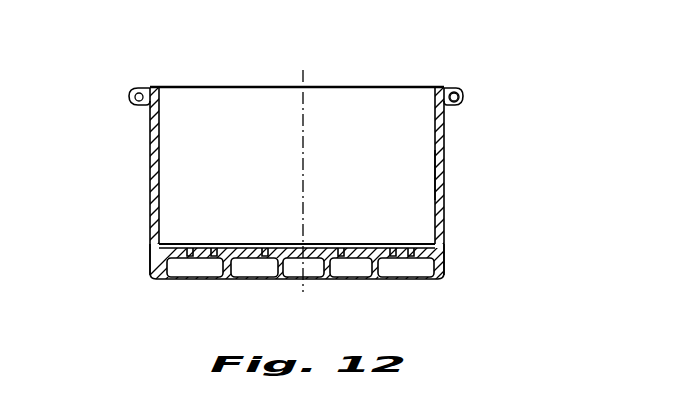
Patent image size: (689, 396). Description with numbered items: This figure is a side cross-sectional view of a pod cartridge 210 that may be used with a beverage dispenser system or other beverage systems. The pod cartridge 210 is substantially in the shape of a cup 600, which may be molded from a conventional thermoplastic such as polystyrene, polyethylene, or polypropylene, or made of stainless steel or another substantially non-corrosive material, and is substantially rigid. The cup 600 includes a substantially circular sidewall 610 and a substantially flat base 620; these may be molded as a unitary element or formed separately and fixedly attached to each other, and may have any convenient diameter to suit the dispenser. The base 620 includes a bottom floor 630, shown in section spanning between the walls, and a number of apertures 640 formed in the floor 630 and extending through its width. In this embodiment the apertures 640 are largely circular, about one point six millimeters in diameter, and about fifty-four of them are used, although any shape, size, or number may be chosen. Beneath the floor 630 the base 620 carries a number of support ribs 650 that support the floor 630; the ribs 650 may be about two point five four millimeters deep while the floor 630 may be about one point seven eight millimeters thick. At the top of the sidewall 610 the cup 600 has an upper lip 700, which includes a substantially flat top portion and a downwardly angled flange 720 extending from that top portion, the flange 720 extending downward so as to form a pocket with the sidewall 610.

The pod cartridge 210 is at (158, 58).
The cup 600 is at (448, 140).
The sidewall 610 is at (446, 176).
The base 620 is at (447, 250).
The bottom floor 630 is at (312, 247).
The apertures 640 is at (214, 248).
The support ribs 650 is at (224, 277).
The upper lip 700 is at (145, 87).
The flange 720 is at (465, 93).